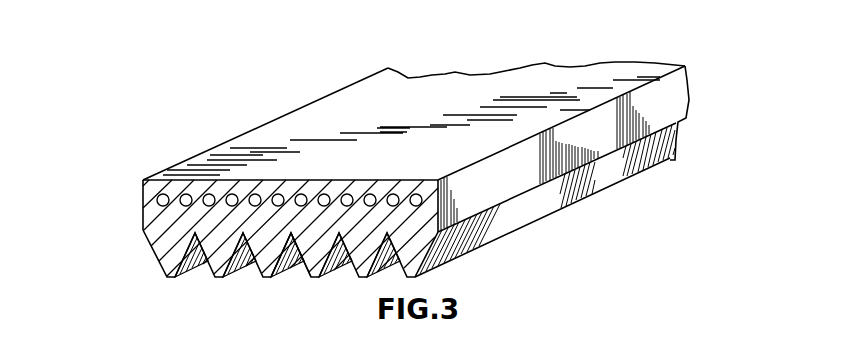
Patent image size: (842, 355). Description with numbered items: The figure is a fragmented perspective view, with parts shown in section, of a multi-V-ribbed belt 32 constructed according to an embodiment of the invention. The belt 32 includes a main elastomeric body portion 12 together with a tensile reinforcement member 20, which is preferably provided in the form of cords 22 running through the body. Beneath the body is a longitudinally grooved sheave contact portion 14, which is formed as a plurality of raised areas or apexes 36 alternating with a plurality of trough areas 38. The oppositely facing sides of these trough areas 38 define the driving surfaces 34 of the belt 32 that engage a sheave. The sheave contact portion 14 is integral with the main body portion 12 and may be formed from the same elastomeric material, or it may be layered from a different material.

The main elastomeric body portion 12 is at (462, 112).
The longitudinally grooved sheave contact portion 14 is at (498, 243).
The tensile reinforcement member 20 is at (143, 213).
The cords 22 is at (282, 194).
The multi-V-ribbed belt 32 is at (225, 128).
The driving surfaces 34 is at (290, 246).
The raised areas or apexes 36 is at (165, 277).
The trough areas 38 is at (232, 275).